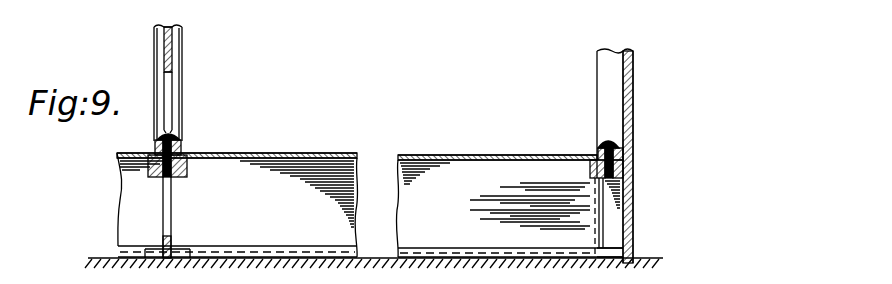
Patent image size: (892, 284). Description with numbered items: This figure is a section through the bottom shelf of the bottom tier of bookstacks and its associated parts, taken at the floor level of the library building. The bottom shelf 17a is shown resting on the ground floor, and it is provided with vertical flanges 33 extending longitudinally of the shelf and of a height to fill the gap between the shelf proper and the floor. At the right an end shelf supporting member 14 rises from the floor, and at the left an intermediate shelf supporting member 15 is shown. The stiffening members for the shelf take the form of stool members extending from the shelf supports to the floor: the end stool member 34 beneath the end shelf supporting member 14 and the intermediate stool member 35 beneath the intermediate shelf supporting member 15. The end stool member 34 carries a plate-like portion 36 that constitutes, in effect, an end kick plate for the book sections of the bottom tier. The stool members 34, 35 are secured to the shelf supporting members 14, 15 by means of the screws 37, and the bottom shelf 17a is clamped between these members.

The end shelf supporting member 14 is at (620, 83).
The intermediate shelf supporting member 15 is at (175, 85).
The bottom shelf 17a is at (317, 153).
The vertical flange 33 is at (370, 205).
The end stool member 34 is at (614, 209).
The intermediate stool member 35 is at (173, 202).
The plate-like portion 36 is at (633, 231).
The screw 37 is at (180, 134).